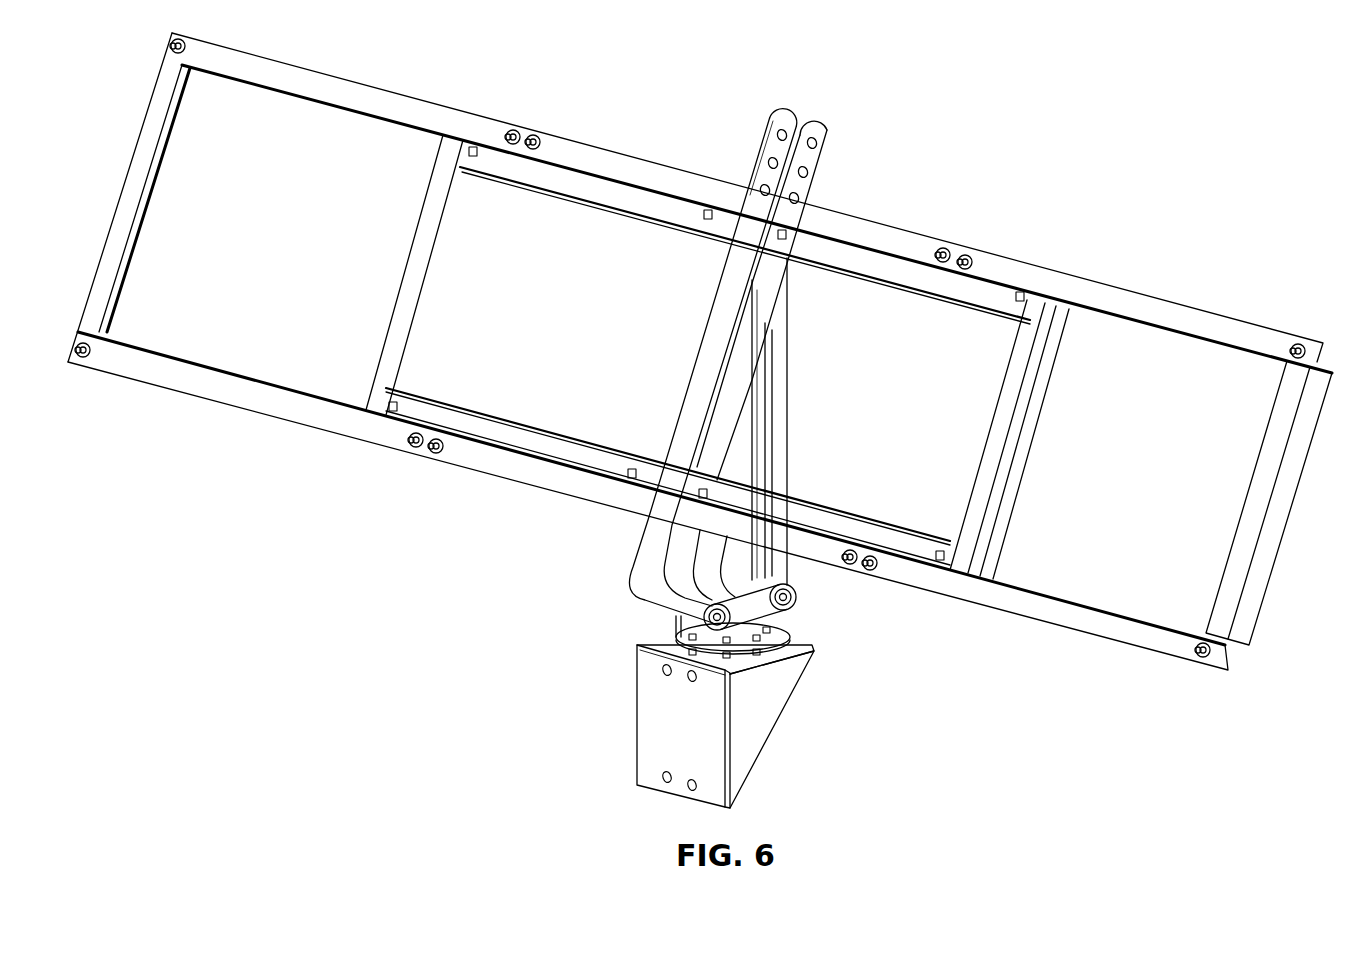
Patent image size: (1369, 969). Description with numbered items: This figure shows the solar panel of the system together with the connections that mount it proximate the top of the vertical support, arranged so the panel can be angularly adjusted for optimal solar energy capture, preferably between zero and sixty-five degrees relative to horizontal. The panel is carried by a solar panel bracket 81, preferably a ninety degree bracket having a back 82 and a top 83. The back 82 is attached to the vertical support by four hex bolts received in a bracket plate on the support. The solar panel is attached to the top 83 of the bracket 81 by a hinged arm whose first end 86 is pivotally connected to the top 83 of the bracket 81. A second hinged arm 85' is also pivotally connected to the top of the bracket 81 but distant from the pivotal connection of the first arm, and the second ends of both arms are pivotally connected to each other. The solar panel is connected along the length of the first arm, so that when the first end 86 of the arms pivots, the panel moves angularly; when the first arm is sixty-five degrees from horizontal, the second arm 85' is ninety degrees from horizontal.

The solar panel bracket 81 is at (637, 708).
The back 82 is at (703, 755).
The top 83 is at (797, 645).
The second hinged arm 85' is at (807, 421).
The first end 86 is at (703, 617).